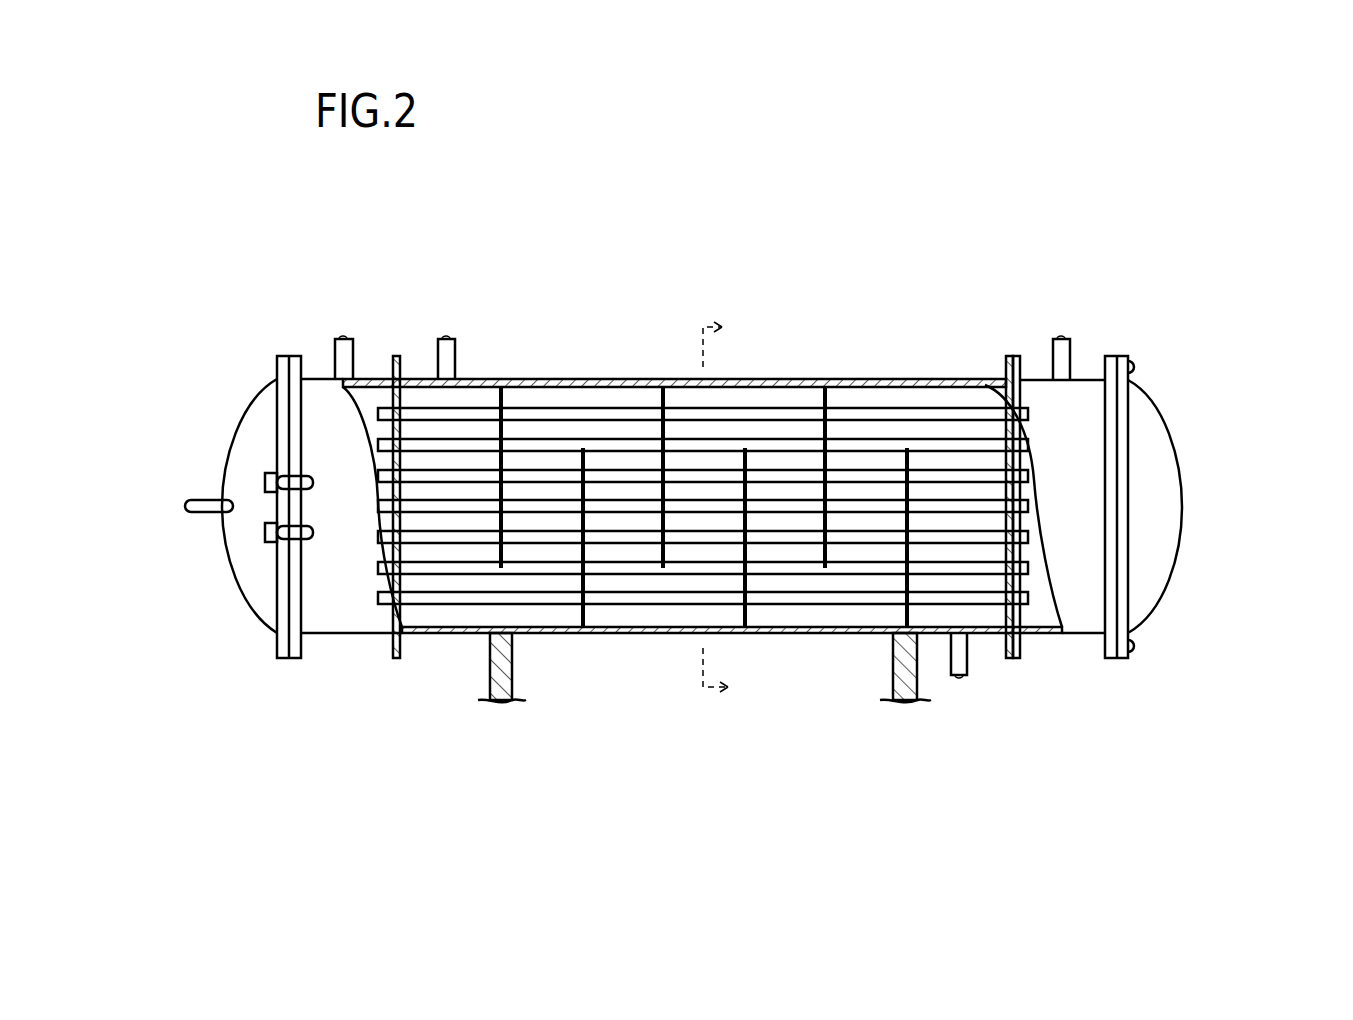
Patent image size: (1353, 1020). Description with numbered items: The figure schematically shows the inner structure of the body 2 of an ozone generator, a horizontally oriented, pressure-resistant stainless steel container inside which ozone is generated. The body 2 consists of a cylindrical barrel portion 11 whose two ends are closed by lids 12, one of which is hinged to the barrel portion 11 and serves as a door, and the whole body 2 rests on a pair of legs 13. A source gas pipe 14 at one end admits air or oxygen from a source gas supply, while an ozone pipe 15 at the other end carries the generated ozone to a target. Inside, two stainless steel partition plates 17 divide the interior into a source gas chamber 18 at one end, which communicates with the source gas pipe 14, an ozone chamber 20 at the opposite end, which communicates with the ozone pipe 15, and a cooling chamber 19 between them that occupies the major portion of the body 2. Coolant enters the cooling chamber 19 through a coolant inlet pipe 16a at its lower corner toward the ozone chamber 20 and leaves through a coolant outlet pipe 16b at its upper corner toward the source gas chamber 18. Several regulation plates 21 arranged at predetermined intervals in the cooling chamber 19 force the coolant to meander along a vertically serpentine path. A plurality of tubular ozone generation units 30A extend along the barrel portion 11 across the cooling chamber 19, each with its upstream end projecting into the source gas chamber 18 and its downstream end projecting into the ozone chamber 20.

The body 2 is at (855, 281).
The barrel portion 11 is at (563, 379).
The lid 12 is at (247, 560).
The leg 13 is at (489, 683).
The source gas pipe 14 is at (340, 355).
The ozone pipe 15 is at (1066, 352).
The coolant inlet pipe 16a is at (966, 655).
The coolant outlet pipe 16b is at (452, 360).
The partition plate 17 is at (997, 394).
The source gas chamber 18 is at (372, 401).
The cooling chamber 19 is at (637, 611).
The ozone chamber 20 is at (1040, 611).
The regulation plate 21 is at (829, 428).
The ozone generation unit 30A is at (627, 412).